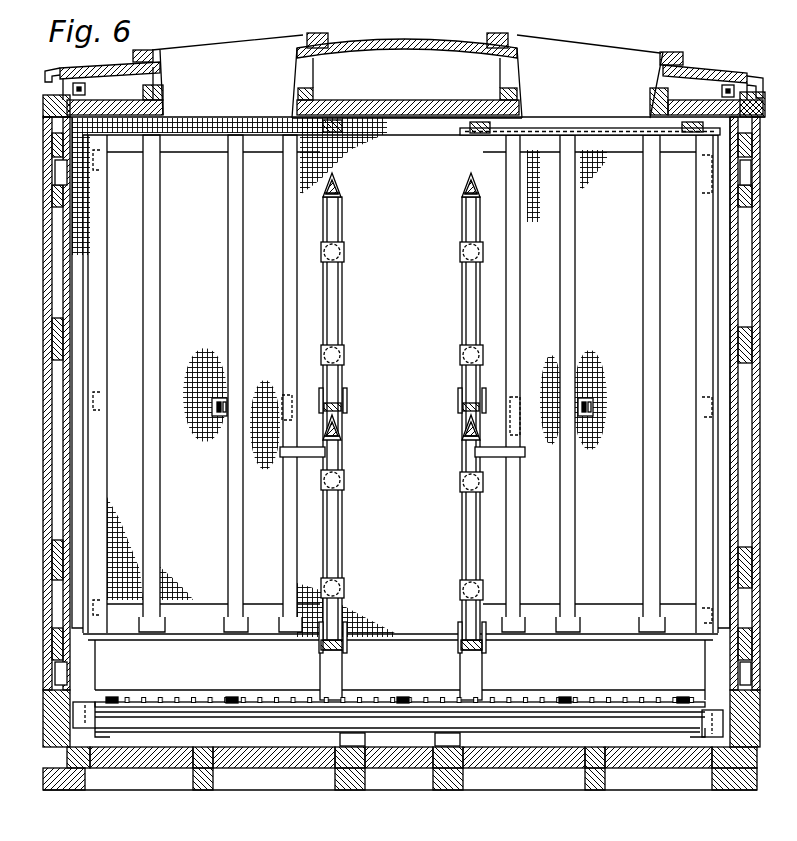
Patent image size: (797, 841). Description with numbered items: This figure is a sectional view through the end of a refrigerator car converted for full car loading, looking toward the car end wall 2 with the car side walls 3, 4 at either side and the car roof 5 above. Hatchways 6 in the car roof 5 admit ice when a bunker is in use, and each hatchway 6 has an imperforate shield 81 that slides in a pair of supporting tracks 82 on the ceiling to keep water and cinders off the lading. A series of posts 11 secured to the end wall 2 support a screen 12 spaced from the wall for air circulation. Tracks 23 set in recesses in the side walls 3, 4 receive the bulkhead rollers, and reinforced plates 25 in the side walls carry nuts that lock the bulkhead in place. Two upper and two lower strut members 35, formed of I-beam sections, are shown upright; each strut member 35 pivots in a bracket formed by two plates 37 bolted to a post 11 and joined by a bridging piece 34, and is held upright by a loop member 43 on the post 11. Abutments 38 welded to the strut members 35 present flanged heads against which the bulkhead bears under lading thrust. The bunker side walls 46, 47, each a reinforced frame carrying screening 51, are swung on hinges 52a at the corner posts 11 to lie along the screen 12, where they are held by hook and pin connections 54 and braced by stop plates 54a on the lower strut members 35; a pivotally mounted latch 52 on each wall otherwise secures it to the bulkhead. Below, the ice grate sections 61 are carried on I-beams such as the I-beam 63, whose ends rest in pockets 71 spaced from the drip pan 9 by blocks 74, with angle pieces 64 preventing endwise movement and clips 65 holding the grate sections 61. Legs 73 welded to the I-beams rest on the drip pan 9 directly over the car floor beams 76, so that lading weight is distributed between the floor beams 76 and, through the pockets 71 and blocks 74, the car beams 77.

The car end wall 2 is at (403, 652).
The car side wall 3 is at (58, 466).
The car side wall 4 is at (748, 442).
The car roof 5 is at (713, 69).
The hatchway 6 is at (241, 48).
The drip pan 9 is at (262, 736).
The post 11 is at (75, 504).
The screen 12 is at (368, 138).
The track 23 is at (53, 173).
The reinforced plate 25 is at (60, 351).
The bridging piece 34 is at (341, 408).
The strut member 35 is at (333, 291).
The plate 37 is at (321, 396).
The abutment 38 is at (344, 253).
The loop member 43 is at (343, 181).
The bunker side wall 46 is at (268, 326).
The bunker side wall 47 is at (538, 329).
The screening 51 is at (206, 350).
The latch 52 is at (282, 408).
The hinge 52a is at (100, 168).
The hook and pin connection 54 is at (212, 411).
The stop plate 54a is at (322, 453).
The ice grate section 61 is at (158, 702).
The I-beam 63 is at (162, 718).
The angle piece 64 is at (100, 737).
The clip 65 is at (113, 697).
The pocket 71 is at (80, 714).
The leg 73 is at (435, 741).
The block 74 is at (78, 742).
The car floor beam 76 is at (350, 790).
The car beam 77 is at (77, 790).
The shield 81 is at (548, 128).
The track 82 is at (470, 128).